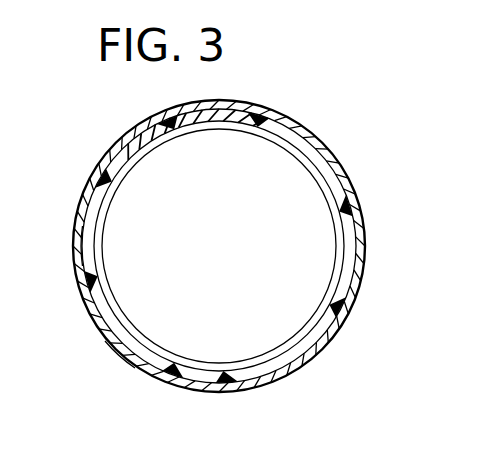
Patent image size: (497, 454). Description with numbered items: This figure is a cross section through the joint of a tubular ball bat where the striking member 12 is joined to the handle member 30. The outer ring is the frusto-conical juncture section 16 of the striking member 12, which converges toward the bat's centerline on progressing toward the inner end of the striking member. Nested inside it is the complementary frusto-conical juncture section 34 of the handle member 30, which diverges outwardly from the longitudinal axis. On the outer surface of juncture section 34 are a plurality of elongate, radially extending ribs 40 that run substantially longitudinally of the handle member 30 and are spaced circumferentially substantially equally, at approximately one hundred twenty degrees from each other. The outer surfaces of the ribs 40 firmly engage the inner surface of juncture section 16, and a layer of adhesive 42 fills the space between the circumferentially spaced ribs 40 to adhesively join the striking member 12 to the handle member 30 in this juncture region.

The striking member 12 is at (123, 355).
The juncture section of the striking member 16 is at (323, 350).
The handle member 30 is at (83, 265).
The juncture section of the handle member 34 is at (360, 271).
The ribs 40 is at (96, 176).
The layer of adhesive 42 is at (348, 301).